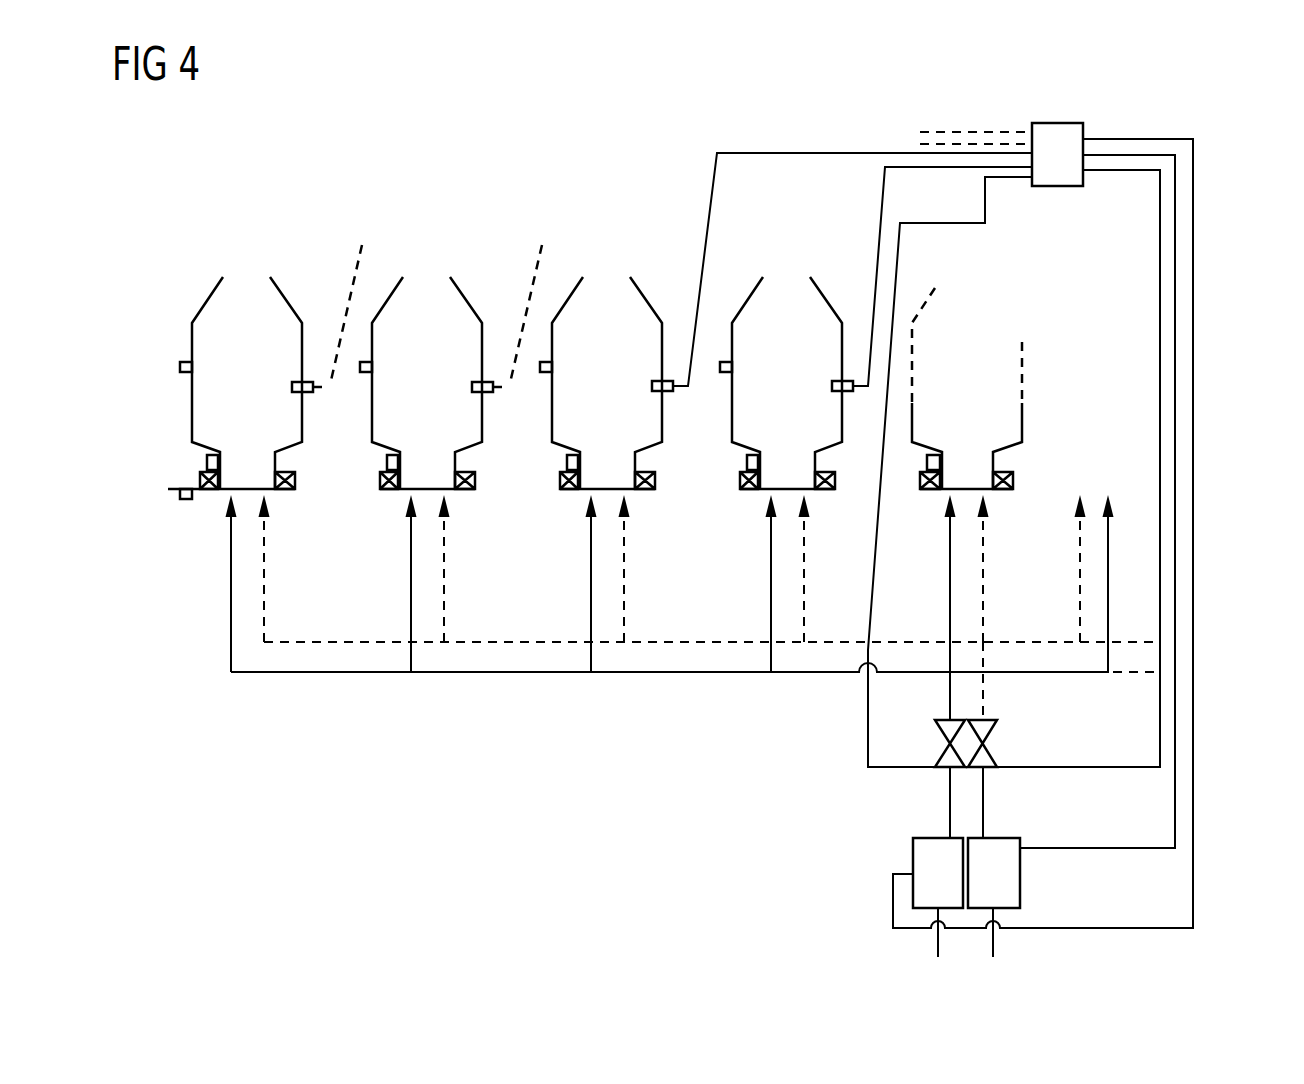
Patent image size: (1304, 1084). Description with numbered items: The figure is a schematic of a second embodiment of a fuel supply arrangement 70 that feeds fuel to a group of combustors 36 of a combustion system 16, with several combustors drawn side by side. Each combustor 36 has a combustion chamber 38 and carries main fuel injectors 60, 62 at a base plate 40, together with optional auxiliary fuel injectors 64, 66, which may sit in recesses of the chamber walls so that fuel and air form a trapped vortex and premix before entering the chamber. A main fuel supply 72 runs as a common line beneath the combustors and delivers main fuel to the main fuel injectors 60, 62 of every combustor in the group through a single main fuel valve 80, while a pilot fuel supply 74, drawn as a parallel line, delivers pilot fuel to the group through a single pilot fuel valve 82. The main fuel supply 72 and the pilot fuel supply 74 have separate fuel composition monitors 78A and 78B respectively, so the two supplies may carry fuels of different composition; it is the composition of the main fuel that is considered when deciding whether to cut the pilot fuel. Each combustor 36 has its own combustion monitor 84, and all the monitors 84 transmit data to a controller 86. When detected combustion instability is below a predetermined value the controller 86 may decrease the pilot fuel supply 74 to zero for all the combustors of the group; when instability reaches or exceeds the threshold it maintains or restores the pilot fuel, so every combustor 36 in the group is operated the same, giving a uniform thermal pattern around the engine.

The combustion system 16 is at (184, 218).
The combustor 36 is at (178, 312).
The combustion chamber 38 is at (200, 407).
The burner base plate 40 is at (198, 475).
The main fuel injector 60 is at (180, 496).
The main fuel injector 62 is at (200, 470).
The auxiliary fuel injector 64 is at (180, 367).
The auxiliary fuel injector 66 is at (208, 458).
The fuel supply arrangement 70 is at (614, 750).
The main fuel supply 72 is at (950, 702).
The pilot fuel supply 74 is at (983, 702).
The fuel composition monitor 78A is at (913, 848).
The fuel composition monitor 78B is at (1020, 882).
The main fuel valve 80 is at (935, 735).
The pilot fuel valve 82 is at (997, 735).
The combustion monitor 84 is at (307, 381).
The controller 86 is at (1055, 123).